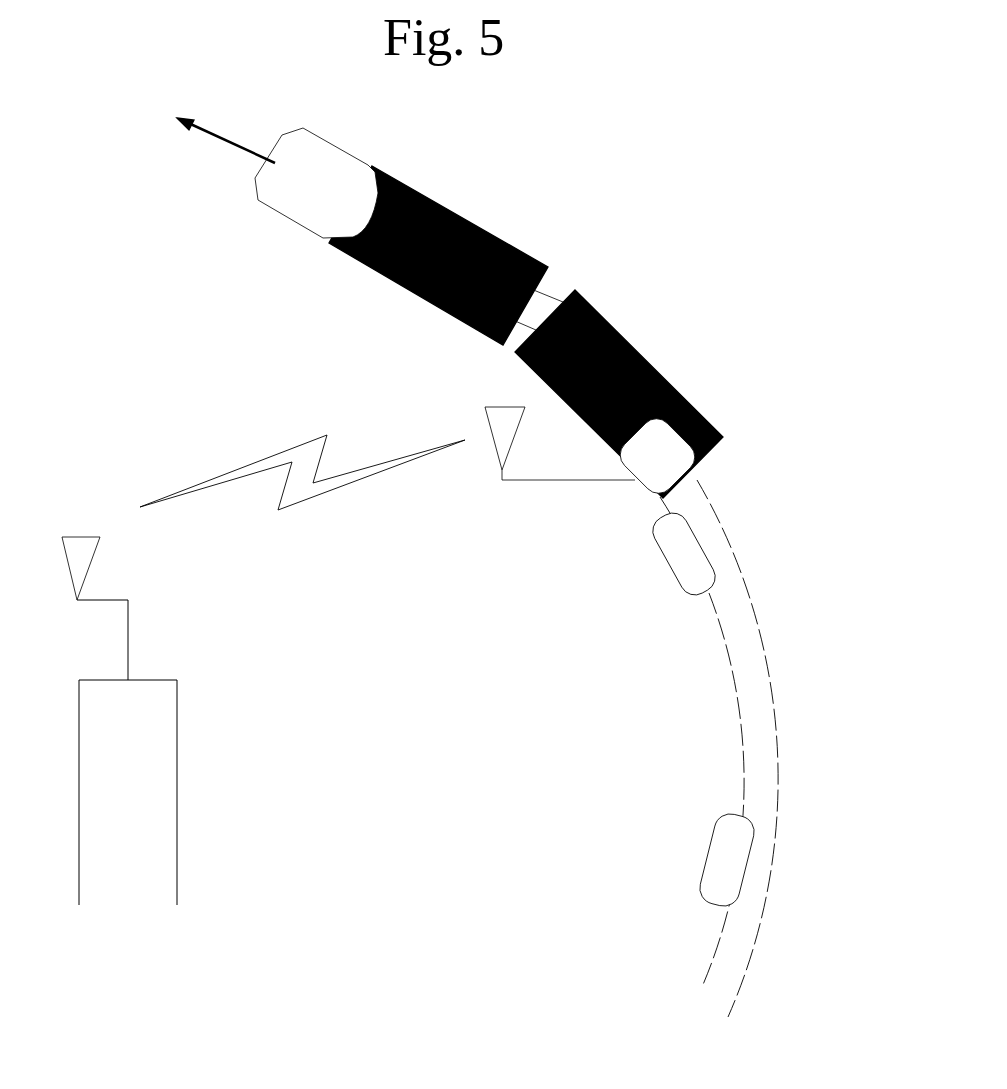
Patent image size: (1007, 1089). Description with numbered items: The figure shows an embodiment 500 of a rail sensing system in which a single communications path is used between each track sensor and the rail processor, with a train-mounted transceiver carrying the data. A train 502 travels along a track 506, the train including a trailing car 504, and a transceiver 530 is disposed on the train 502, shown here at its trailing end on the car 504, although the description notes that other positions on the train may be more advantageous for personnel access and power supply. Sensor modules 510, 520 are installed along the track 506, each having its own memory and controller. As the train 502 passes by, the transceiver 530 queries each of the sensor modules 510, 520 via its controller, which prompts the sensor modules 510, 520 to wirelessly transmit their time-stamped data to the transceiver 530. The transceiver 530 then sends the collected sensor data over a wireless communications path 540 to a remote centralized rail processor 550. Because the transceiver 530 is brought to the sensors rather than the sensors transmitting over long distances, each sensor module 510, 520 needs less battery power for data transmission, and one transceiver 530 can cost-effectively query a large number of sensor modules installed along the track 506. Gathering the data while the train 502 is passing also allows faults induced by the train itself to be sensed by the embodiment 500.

The embodiment 500 is at (441, 705).
The train 502 is at (351, 170).
The rail car 504 is at (628, 337).
The track 506 is at (738, 680).
The sensor module 510 is at (663, 567).
The sensor module 520 is at (703, 853).
The transceiver 530 is at (658, 455).
The wireless communications path 540 is at (290, 440).
The rail processor 550 is at (183, 795).